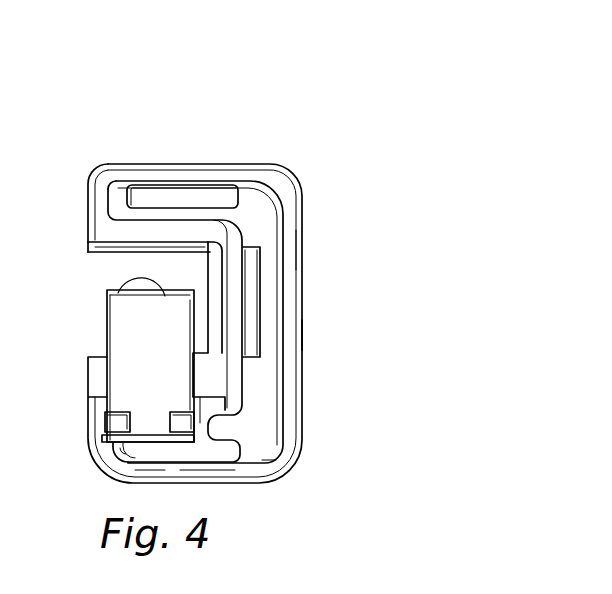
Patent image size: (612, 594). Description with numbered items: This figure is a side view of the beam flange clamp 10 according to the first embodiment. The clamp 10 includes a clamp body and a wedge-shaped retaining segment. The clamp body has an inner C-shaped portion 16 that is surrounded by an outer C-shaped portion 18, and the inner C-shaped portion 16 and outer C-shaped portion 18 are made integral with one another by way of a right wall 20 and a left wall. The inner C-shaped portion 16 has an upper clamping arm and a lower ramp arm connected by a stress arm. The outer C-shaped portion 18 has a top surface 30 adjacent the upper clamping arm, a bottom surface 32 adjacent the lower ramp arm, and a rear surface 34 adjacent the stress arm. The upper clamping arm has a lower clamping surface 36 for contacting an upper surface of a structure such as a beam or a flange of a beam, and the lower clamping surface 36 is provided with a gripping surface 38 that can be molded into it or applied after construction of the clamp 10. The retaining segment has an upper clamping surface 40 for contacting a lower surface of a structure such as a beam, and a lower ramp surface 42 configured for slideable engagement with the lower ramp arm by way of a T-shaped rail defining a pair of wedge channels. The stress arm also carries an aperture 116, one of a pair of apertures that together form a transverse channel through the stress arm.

The clamp 10 is at (108, 150).
The inner C-shaped portion 16 is at (235, 297).
The outer C-shaped portion 18 is at (292, 250).
The right wall 20 is at (262, 207).
The top surface 30 is at (190, 163).
The bottom surface 32 is at (231, 486).
The rear surface 34 is at (303, 333).
The lower clamping surface 36 is at (107, 252).
The gripping surface 38 is at (123, 252).
The upper clamping surface 40 is at (115, 296).
The lower ramp surface 42 is at (143, 448).
The aperture 116 is at (262, 352).